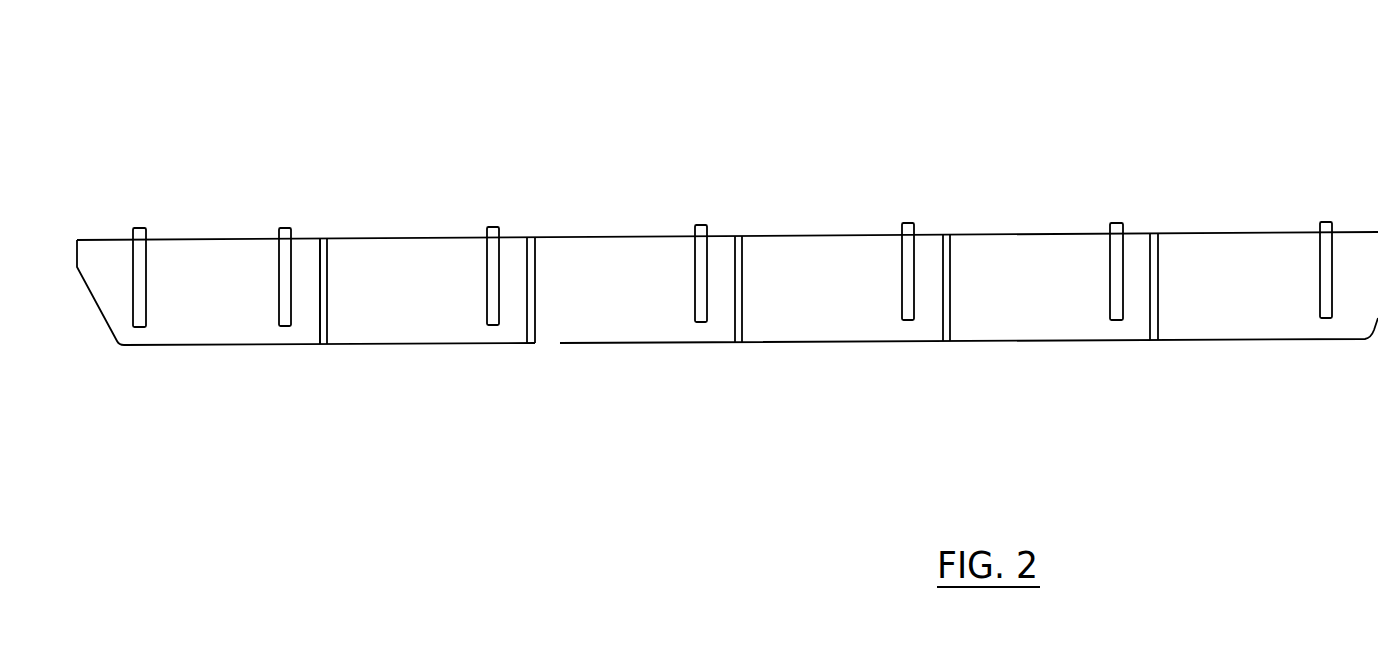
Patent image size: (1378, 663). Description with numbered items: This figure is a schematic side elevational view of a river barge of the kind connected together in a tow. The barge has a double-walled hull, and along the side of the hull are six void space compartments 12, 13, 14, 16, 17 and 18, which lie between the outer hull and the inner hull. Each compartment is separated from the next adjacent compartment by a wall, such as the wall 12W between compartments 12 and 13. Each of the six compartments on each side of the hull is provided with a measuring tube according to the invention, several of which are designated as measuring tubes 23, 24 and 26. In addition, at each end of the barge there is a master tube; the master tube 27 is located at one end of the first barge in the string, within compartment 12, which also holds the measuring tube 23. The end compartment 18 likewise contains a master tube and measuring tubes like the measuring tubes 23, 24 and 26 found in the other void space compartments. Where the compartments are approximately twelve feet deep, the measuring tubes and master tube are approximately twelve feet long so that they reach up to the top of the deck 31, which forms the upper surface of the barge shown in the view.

The deck 31 is at (183, 239).
The void space compartment 12 is at (259, 292).
The wall 12W is at (317, 300).
The void space compartment 13 is at (461, 290).
The void space compartment 14 is at (668, 289).
The void space compartment 16 is at (878, 288).
The void space compartment 17 is at (1089, 286).
The void space compartment 18 is at (1276, 270).
The master tube 27 is at (142, 328).
The measuring tube 23 is at (287, 328).
The measuring tube 24 is at (495, 327).
The measuring tube 26 is at (703, 325).